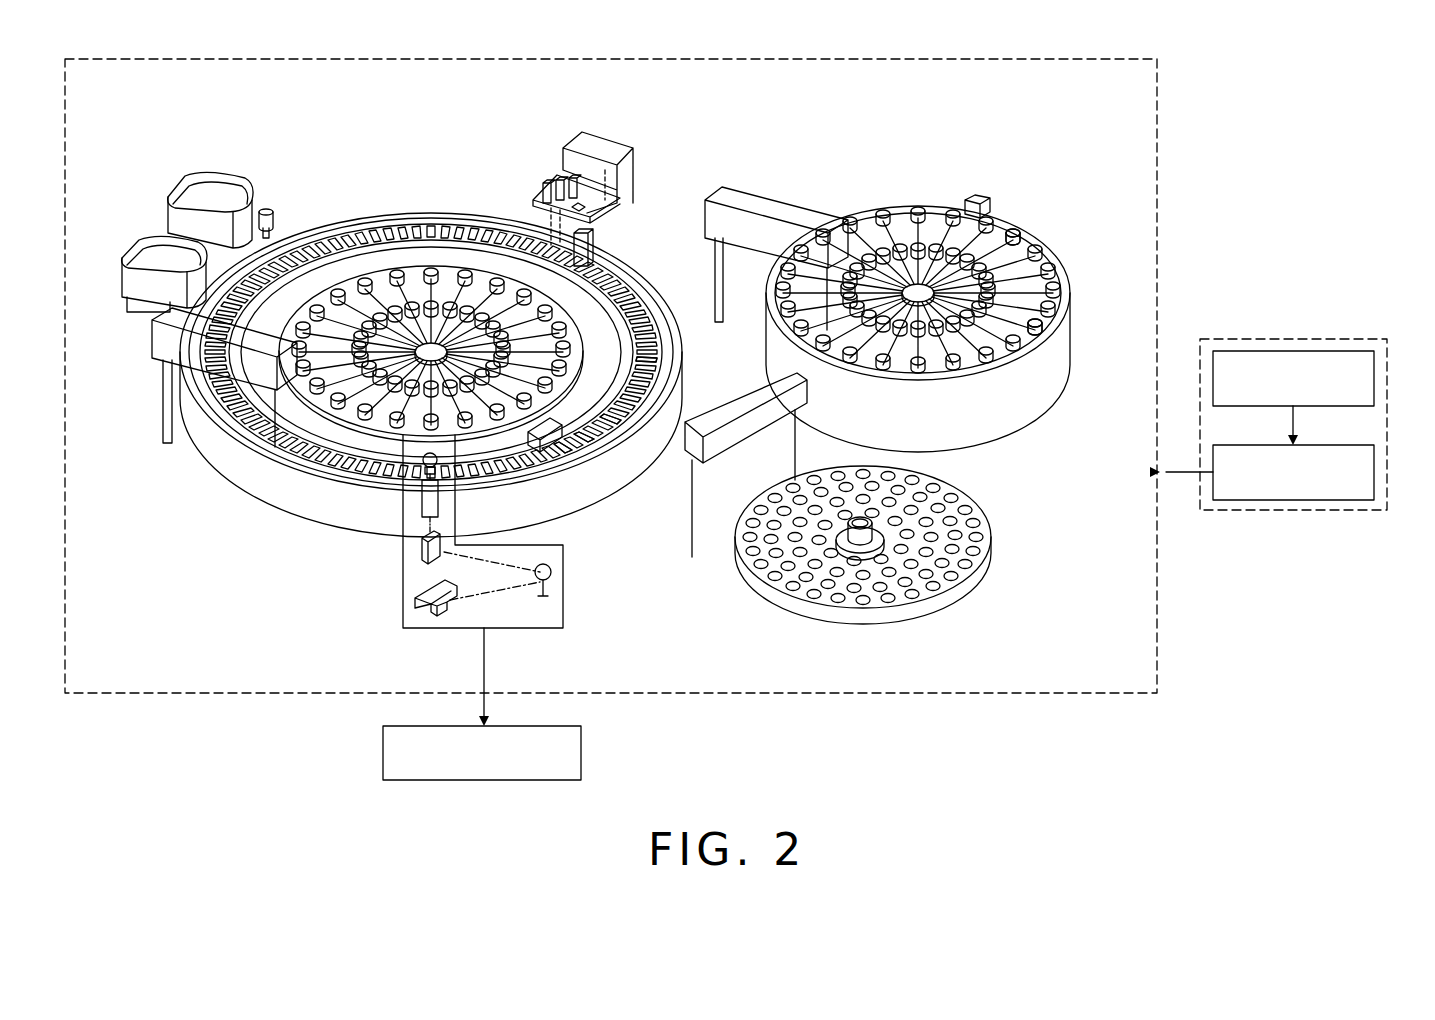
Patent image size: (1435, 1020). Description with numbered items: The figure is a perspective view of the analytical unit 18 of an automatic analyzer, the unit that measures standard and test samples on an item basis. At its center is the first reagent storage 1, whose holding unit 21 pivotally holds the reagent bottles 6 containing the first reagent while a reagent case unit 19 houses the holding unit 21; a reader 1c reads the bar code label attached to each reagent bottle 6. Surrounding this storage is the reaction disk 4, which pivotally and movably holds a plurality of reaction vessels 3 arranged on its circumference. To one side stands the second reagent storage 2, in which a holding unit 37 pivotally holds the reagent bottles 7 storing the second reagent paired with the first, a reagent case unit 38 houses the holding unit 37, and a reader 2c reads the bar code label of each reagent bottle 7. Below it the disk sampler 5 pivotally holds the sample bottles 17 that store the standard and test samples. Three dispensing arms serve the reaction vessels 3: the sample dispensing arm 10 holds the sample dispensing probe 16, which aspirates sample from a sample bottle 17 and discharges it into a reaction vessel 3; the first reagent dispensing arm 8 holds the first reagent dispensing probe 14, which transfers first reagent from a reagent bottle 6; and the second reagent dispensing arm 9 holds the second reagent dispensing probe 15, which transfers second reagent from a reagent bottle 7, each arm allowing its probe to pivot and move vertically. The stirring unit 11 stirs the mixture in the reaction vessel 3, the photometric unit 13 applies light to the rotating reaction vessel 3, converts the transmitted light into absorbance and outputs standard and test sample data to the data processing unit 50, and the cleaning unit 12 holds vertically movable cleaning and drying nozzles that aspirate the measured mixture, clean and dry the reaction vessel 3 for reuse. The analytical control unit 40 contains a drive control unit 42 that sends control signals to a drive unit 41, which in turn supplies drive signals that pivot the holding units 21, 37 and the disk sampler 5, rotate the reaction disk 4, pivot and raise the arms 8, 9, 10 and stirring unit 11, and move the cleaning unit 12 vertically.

The first reagent storage 1 is at (470, 255).
The reader 1c is at (653, 368).
The second reagent storage 2 is at (1011, 200).
The reader 2c is at (980, 196).
The reaction vessel 3 is at (562, 468).
The reaction disk 4 is at (616, 262).
The disk sampler 5 is at (935, 598).
The reagent bottle 6 is at (543, 333).
The reagent bottle 7 is at (915, 270).
The first reagent dispensing arm 8 is at (150, 342).
The second reagent dispensing arm 9 is at (770, 195).
The sample dispensing arm 10 is at (748, 395).
The stirring unit 11 is at (176, 183).
The cleaning unit 12 is at (587, 140).
The photometric unit 13 is at (520, 630).
The first reagent dispensing probe 14 is at (245, 425).
The second reagent dispensing probe 15 is at (850, 290).
The sample dispensing probe 16 is at (788, 453).
The sample bottle 17 is at (860, 605).
The analytical unit 18 is at (592, 59).
The reagent case unit 19 is at (357, 278).
The holding unit 21 is at (425, 268).
The holding unit 37 is at (1035, 292).
The reagent case unit 38 is at (1000, 240).
The analytical control unit 40 is at (1283, 339).
The drive unit 41 is at (1374, 482).
The drive control unit 42 is at (1374, 378).
The data processing unit 50 is at (583, 750).